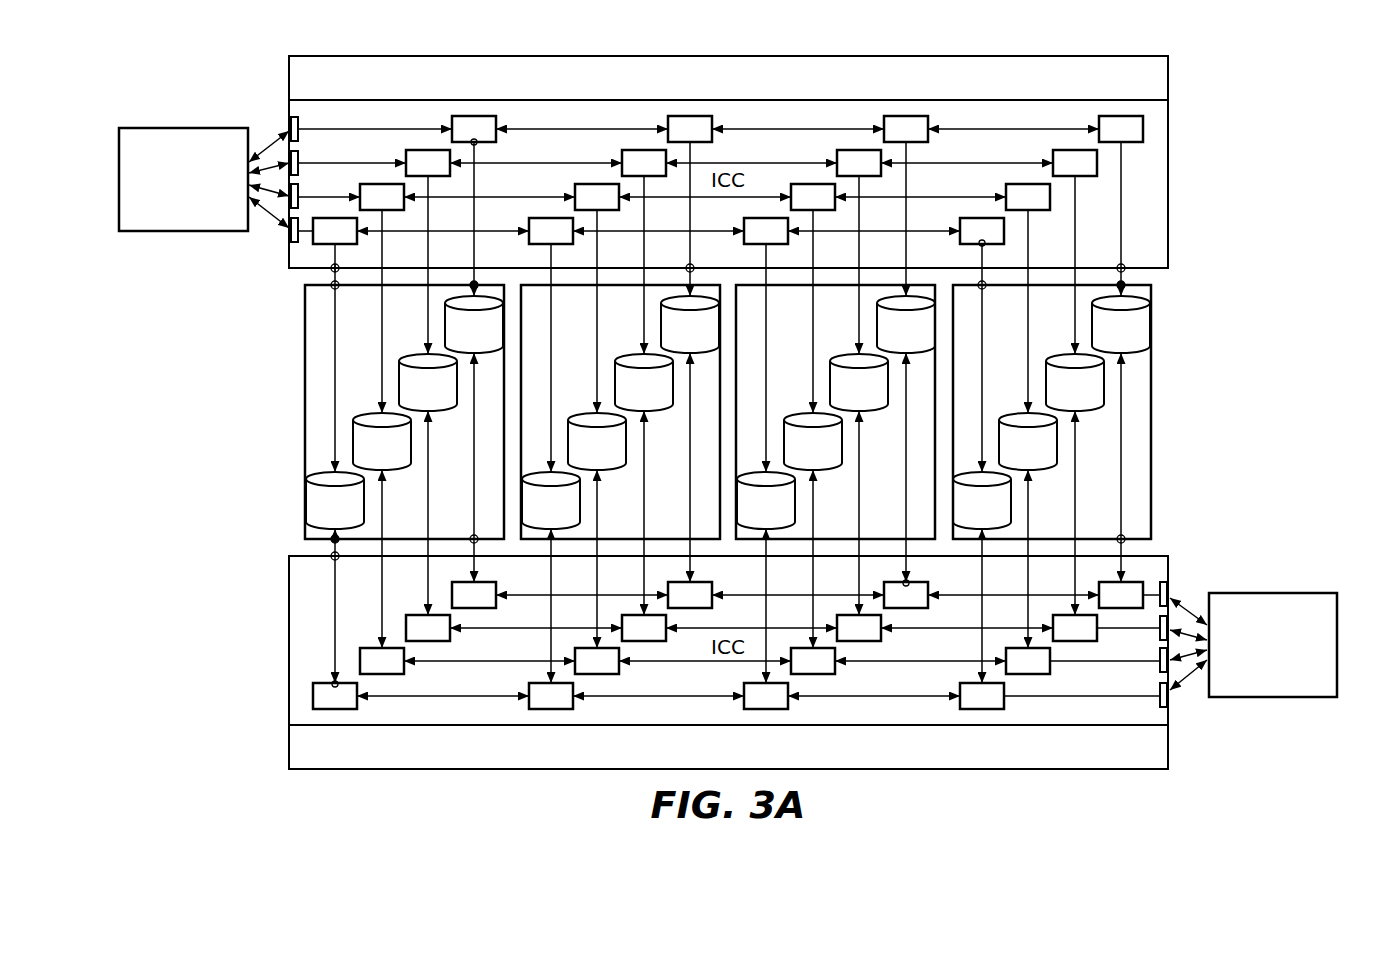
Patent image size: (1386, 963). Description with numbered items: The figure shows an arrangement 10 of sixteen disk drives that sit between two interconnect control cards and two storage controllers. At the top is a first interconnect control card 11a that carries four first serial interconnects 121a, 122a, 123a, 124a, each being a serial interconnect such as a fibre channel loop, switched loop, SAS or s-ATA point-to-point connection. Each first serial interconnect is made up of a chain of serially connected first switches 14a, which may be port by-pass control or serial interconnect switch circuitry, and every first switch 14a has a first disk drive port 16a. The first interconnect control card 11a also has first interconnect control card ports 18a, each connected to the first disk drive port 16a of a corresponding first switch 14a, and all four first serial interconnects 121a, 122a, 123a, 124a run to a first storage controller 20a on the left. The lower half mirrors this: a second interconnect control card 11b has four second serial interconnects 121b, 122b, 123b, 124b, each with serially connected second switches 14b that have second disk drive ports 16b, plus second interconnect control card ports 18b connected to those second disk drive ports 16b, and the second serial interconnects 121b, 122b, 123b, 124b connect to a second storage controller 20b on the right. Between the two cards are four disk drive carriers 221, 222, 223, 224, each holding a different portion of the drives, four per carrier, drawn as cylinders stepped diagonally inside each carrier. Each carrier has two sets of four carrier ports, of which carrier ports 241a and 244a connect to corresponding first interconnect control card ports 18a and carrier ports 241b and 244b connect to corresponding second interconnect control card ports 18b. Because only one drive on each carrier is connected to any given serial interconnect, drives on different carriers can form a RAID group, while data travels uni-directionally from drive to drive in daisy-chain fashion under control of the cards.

The arrangement 10 is at (1192, 90).
The first interconnect control card 11a is at (727, 56).
The second interconnect control card 11b is at (1160, 556).
The first serial interconnect 121a is at (286, 236).
The first serial interconnect 122a is at (286, 202).
The first serial interconnect 123a is at (285, 162).
The first serial interconnect 124a is at (285, 128).
The second serial interconnect 121b is at (333, 570).
The second serial interconnect 122b is at (358, 658).
The second serial interconnect 123b is at (403, 623).
The second serial interconnect 124b is at (448, 590).
The first switch 14a is at (452, 124).
The second switch 14b is at (527, 704).
The first disk drive port 16a is at (346, 244).
The second disk drive port 16b is at (333, 686).
The first interconnect control card port 18a is at (333, 270).
The second interconnect control card port 18b is at (330, 556).
The first storage controller 20a is at (172, 127).
The second storage controller 20b is at (1303, 593).
The disk drive carrier 221 is at (305, 375).
The disk drive carrier 222 is at (684, 510).
The disk drive carrier 223 is at (899, 510).
The disk drive carrier 224 is at (1152, 385).
The carrier port 241a is at (333, 287).
The carrier port 244a is at (478, 285).
The carrier port 241b is at (331, 539).
The carrier port 244b is at (478, 540).